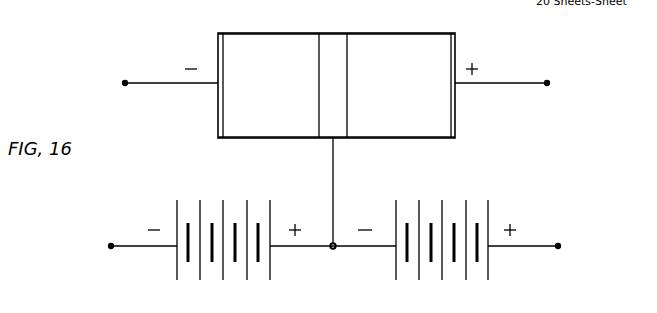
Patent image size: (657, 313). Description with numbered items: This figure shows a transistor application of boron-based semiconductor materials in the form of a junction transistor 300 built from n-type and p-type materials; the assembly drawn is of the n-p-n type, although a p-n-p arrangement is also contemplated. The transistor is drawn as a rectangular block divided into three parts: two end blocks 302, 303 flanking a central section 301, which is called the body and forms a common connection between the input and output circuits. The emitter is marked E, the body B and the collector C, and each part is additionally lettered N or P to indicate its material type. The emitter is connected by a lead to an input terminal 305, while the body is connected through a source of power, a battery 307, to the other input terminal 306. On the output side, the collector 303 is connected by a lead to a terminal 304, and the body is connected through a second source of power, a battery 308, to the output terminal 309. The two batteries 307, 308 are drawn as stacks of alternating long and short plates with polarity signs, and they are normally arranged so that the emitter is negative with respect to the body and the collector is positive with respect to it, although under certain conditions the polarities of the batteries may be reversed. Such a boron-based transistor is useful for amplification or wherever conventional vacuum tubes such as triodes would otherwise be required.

The junction transistor 300 is at (366, 72).
The body section 301 is at (327, 33).
The end block (emitter) 302 is at (272, 33).
The end block (collector) 303 is at (449, 53).
The collector terminal 304 is at (511, 72).
The input terminal 305 is at (165, 72).
The input terminal 306 is at (138, 234).
The battery 307 is at (240, 254).
The battery 308 is at (424, 255).
The output terminal 309 is at (533, 234).